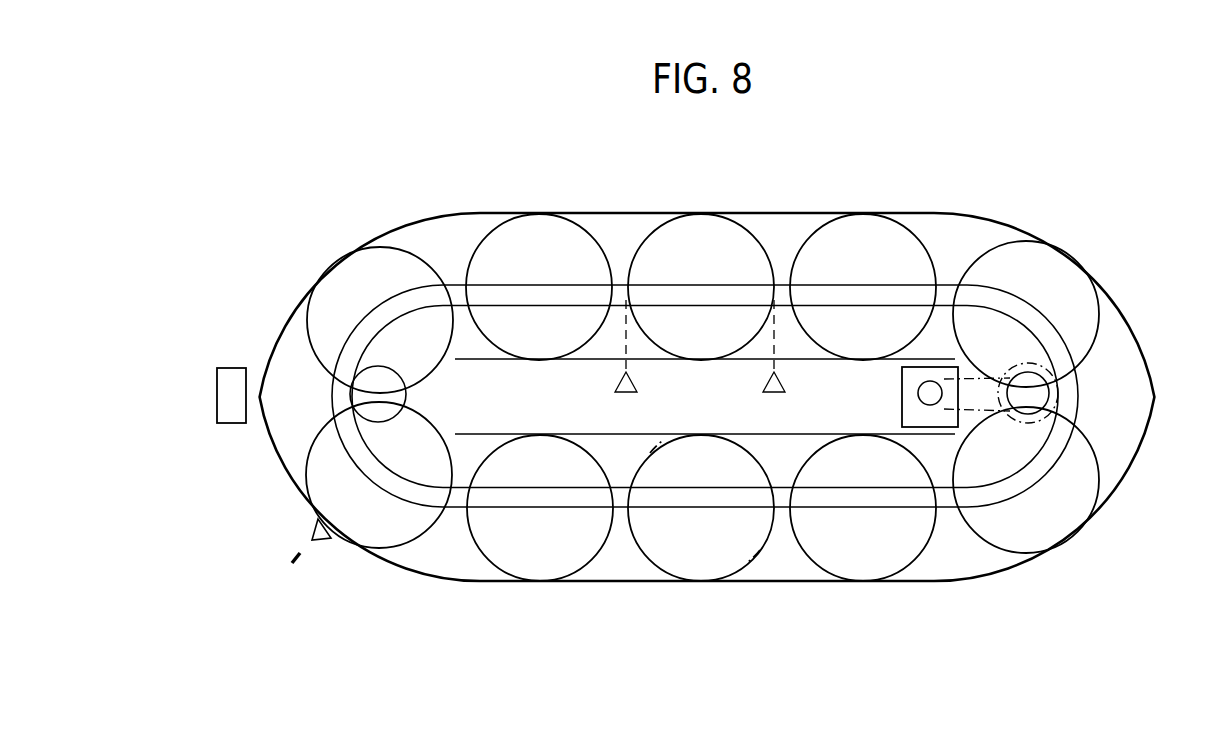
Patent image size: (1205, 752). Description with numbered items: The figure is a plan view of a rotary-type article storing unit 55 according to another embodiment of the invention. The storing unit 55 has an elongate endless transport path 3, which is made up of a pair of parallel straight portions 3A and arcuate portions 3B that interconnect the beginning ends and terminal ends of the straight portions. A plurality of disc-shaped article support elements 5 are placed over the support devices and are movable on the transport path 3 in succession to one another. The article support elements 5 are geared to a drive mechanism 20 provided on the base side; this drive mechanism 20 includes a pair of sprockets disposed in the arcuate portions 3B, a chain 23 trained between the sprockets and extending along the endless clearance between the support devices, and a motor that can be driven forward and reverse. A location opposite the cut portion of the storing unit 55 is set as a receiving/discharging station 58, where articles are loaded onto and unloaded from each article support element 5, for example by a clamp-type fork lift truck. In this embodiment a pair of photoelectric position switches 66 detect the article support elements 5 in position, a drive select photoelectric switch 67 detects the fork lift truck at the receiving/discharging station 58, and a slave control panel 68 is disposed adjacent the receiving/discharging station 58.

The transport path 3 is at (689, 509).
The straight portions 3A is at (737, 513).
The arcuate portions 3B is at (1115, 365).
The article support elements 5 is at (543, 237).
The drive mechanism 20 is at (898, 409).
The chain 23 is at (781, 485).
The article storing unit 55 is at (987, 213).
The receiving/discharging station 58 is at (291, 561).
The photoelectric position switches 66 is at (765, 390).
The drive select photoelectric switch 67 is at (321, 538).
The slave control panel 68 is at (228, 393).